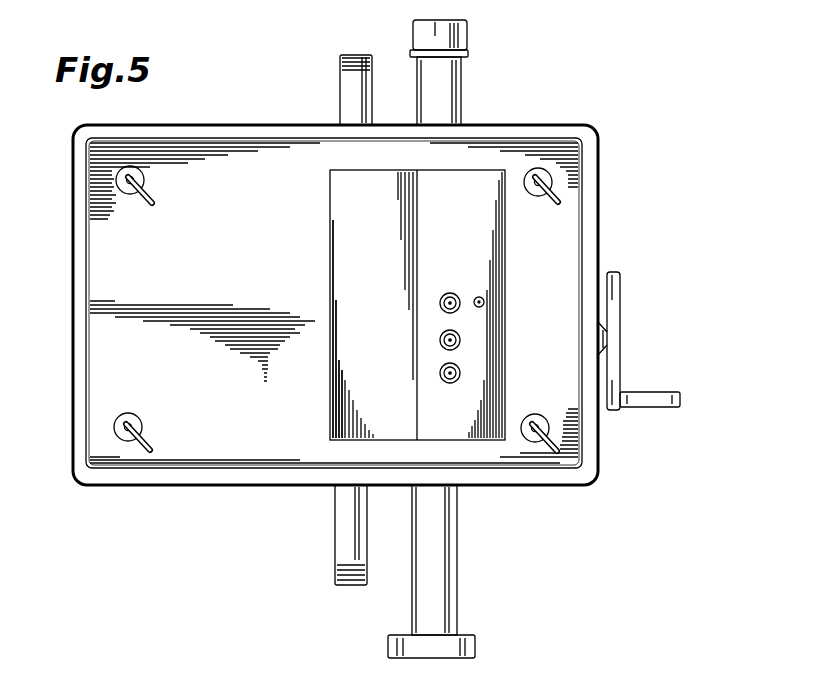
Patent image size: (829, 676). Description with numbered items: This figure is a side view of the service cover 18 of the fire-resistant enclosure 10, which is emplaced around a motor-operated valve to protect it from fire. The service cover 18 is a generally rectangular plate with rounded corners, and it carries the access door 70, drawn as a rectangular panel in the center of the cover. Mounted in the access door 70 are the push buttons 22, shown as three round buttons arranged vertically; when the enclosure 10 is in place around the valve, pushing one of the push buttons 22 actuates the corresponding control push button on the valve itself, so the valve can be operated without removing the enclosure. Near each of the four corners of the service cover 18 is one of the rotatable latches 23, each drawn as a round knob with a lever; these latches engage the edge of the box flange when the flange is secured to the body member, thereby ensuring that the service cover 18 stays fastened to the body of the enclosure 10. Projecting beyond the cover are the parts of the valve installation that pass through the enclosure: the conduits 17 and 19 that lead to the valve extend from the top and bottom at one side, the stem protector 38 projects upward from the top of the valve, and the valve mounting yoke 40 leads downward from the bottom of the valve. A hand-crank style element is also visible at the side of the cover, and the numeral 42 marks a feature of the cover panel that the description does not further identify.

The fire-resistant enclosure 10 is at (600, 448).
The conduit 17 is at (340, 91).
The service cover 18 is at (556, 265).
The conduit 19 is at (336, 528).
The push buttons 22 is at (460, 370).
The rotatable latches 23 is at (152, 203).
The stem protector 38 is at (455, 82).
The valve mounting yoke 40 is at (443, 573).
The cover panel 42 is at (473, 182).
The access door 70 is at (330, 395).